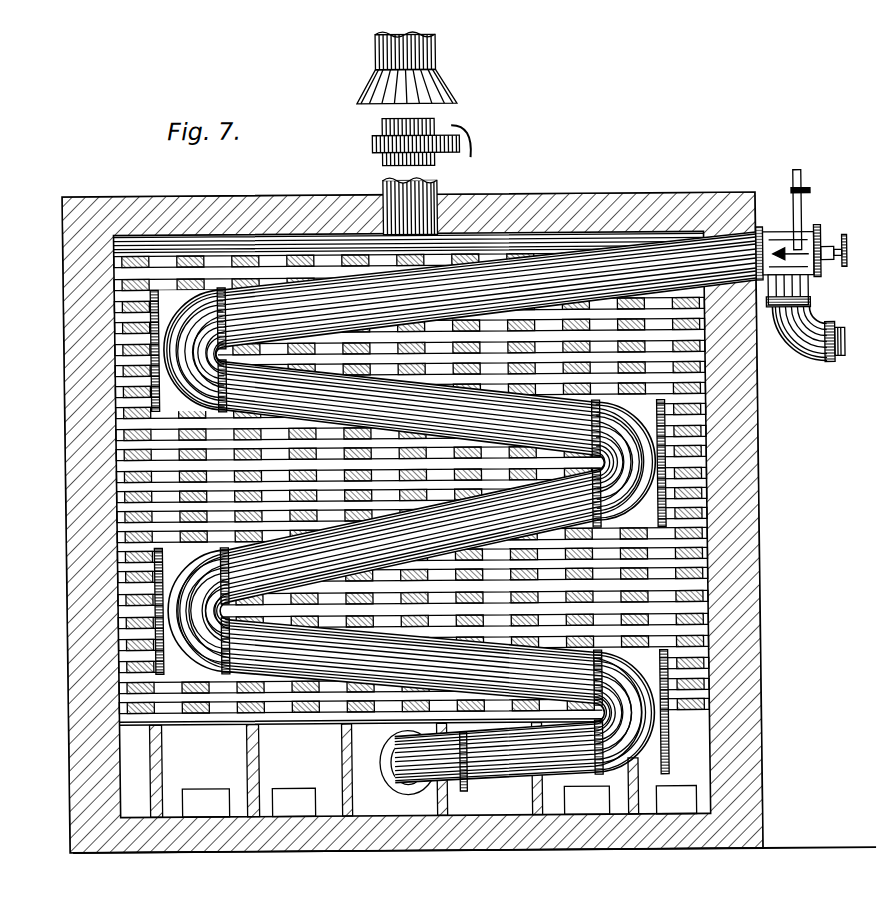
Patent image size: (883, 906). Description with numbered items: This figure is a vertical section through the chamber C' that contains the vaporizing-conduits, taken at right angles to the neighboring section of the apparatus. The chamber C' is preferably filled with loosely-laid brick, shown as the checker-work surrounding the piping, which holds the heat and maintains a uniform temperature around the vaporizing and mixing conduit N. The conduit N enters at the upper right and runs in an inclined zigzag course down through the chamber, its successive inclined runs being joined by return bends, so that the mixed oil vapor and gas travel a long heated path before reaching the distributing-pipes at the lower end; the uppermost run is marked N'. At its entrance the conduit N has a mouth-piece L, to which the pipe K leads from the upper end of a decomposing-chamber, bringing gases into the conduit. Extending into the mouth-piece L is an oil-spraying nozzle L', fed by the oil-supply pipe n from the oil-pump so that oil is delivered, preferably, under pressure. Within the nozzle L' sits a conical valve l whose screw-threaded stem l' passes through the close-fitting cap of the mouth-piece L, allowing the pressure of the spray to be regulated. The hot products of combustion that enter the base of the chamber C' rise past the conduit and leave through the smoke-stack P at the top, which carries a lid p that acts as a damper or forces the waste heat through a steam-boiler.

The vaporizing and mixing conduit N is at (416, 513).
The upper section of heating pipe N' is at (489, 259).
The chamber containing the vaporizing-conduits C' is at (413, 535).
The smoke-stack P is at (384, 168).
The lid p is at (384, 129).
The mouth-piece L is at (795, 239).
The oil-spraying nozzle L' is at (770, 240).
The conical valve l is at (784, 291).
The screw-threaded stem l' is at (834, 257).
The oil-supply pipe n is at (807, 206).
The pipe K is at (808, 325).